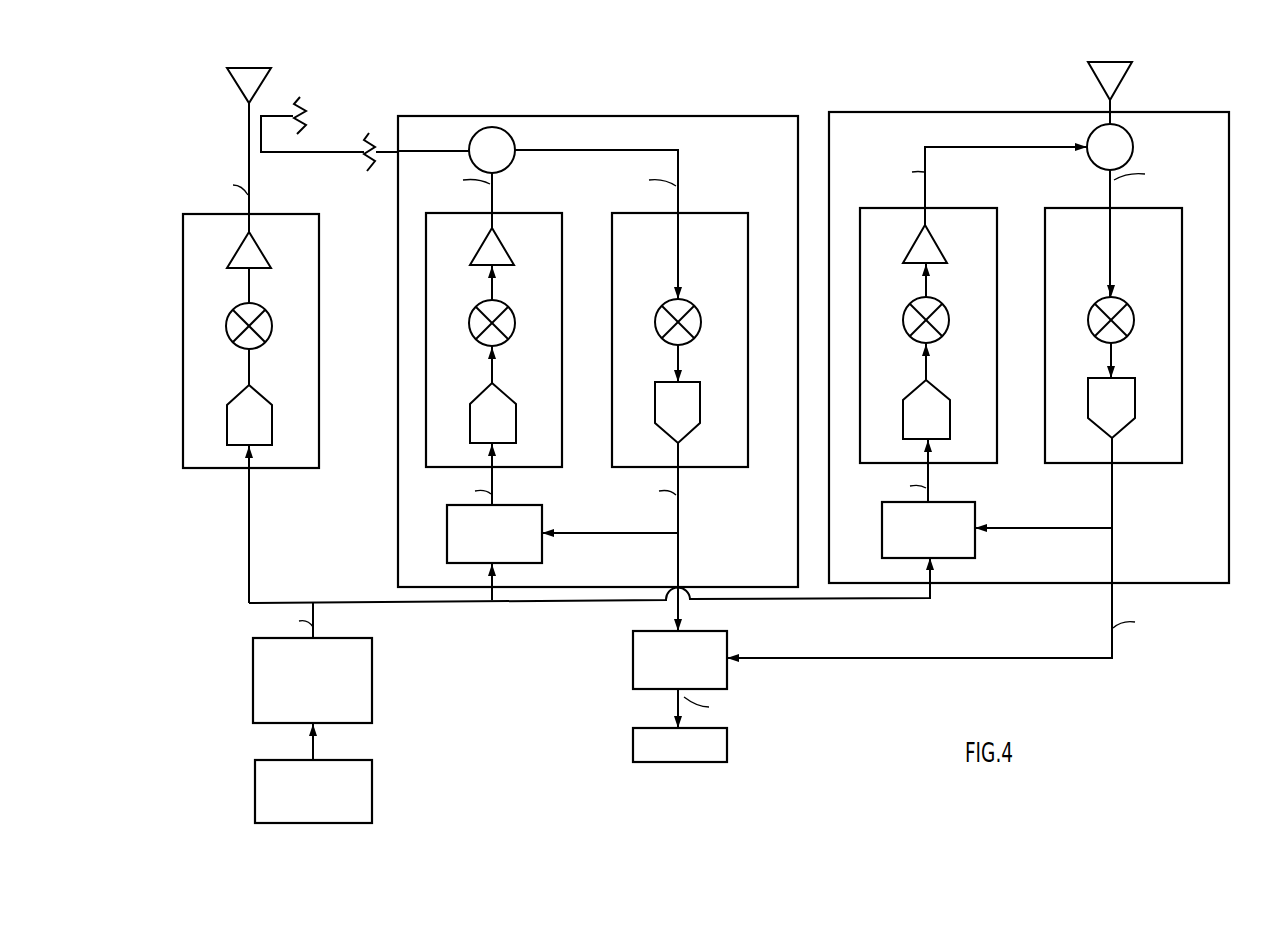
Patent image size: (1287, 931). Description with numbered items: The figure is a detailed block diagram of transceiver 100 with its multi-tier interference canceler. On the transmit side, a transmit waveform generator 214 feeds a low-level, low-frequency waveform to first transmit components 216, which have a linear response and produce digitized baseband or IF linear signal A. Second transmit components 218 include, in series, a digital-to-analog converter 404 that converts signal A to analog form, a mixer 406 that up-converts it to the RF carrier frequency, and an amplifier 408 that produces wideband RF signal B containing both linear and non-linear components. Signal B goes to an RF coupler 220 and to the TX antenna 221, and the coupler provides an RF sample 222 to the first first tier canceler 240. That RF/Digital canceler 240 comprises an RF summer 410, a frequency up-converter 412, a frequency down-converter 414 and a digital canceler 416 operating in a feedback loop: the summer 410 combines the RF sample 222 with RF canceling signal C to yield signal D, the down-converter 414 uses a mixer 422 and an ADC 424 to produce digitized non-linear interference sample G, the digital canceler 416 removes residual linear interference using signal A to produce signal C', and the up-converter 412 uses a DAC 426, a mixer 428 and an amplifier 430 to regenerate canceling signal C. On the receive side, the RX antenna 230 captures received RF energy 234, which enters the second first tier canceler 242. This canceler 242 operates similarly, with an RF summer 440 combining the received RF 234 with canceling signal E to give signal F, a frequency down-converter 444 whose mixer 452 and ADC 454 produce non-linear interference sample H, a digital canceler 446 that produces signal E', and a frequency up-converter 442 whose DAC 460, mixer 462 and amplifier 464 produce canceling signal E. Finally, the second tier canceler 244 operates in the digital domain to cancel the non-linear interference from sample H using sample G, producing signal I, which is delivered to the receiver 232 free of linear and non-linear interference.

The transceiver 100 is at (896, 82).
The transmit waveform generator 214 is at (255, 793).
The first transmit components 216 is at (253, 680).
The second transmit components 218 is at (194, 213).
The RF coupler 220 is at (281, 115).
The TX antenna 221 is at (236, 93).
The RF sample 222 is at (333, 151).
The RX antenna 230 is at (1126, 78).
The receiver 232 is at (633, 748).
The received RF energy 234 is at (1105, 103).
The first first tier canceler 240 is at (745, 115).
The second first tier canceler 242 is at (1200, 111).
The second tier canceler 244 is at (633, 661).
The digital-to-analog converter 404 is at (227, 428).
The mixer 406 is at (227, 327).
The amplifier 408 is at (232, 262).
The RF summer 410 is at (470, 142).
The frequency up-converter 412 is at (530, 468).
The frequency down-converter 414 is at (626, 468).
The digital canceler 416 is at (447, 535).
The mixer 422 is at (700, 312).
The analog-to-digital converter 424 is at (700, 402).
The DAC 426 is at (470, 423).
The mixer 428 is at (469, 325).
The amplifier 430 is at (478, 252).
The RF summer 440 is at (1133, 140).
The frequency up-converter 442 is at (970, 464).
The frequency down-converter 444 is at (1078, 464).
The digital canceler 446 is at (882, 533).
The mixer 452 is at (1089, 312).
The ADC 454 is at (1088, 402).
The DAC 460 is at (903, 415).
The mixer 462 is at (903, 322).
The amplifier 464 is at (914, 244).